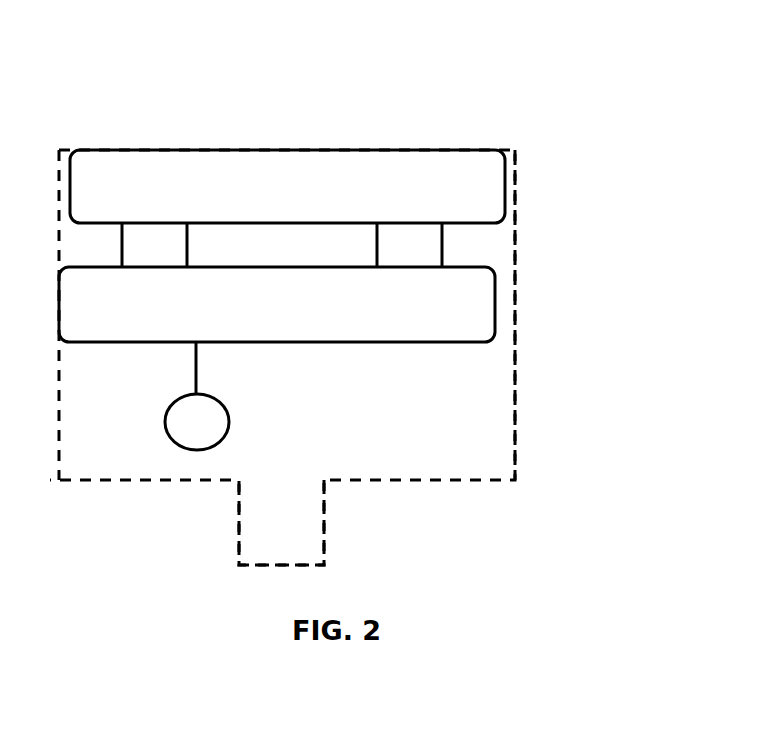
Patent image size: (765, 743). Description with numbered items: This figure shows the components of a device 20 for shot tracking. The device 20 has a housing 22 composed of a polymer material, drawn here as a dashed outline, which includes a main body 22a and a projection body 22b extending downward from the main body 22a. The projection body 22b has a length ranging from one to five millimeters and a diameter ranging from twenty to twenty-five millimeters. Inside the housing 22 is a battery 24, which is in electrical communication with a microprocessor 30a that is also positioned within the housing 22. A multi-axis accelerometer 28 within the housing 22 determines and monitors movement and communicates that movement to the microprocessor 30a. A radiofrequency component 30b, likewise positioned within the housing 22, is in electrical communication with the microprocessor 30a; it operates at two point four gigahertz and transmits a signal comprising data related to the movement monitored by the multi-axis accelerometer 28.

The device 20 is at (432, 63).
The housing 22 is at (60, 148).
The main body 22a is at (515, 268).
The projection body 22b is at (237, 533).
The battery 24 is at (287, 186).
The multi-axis accelerometer 28 is at (197, 396).
The microprocessor 30a is at (154, 245).
The radiofrequency component 30b is at (409, 245).